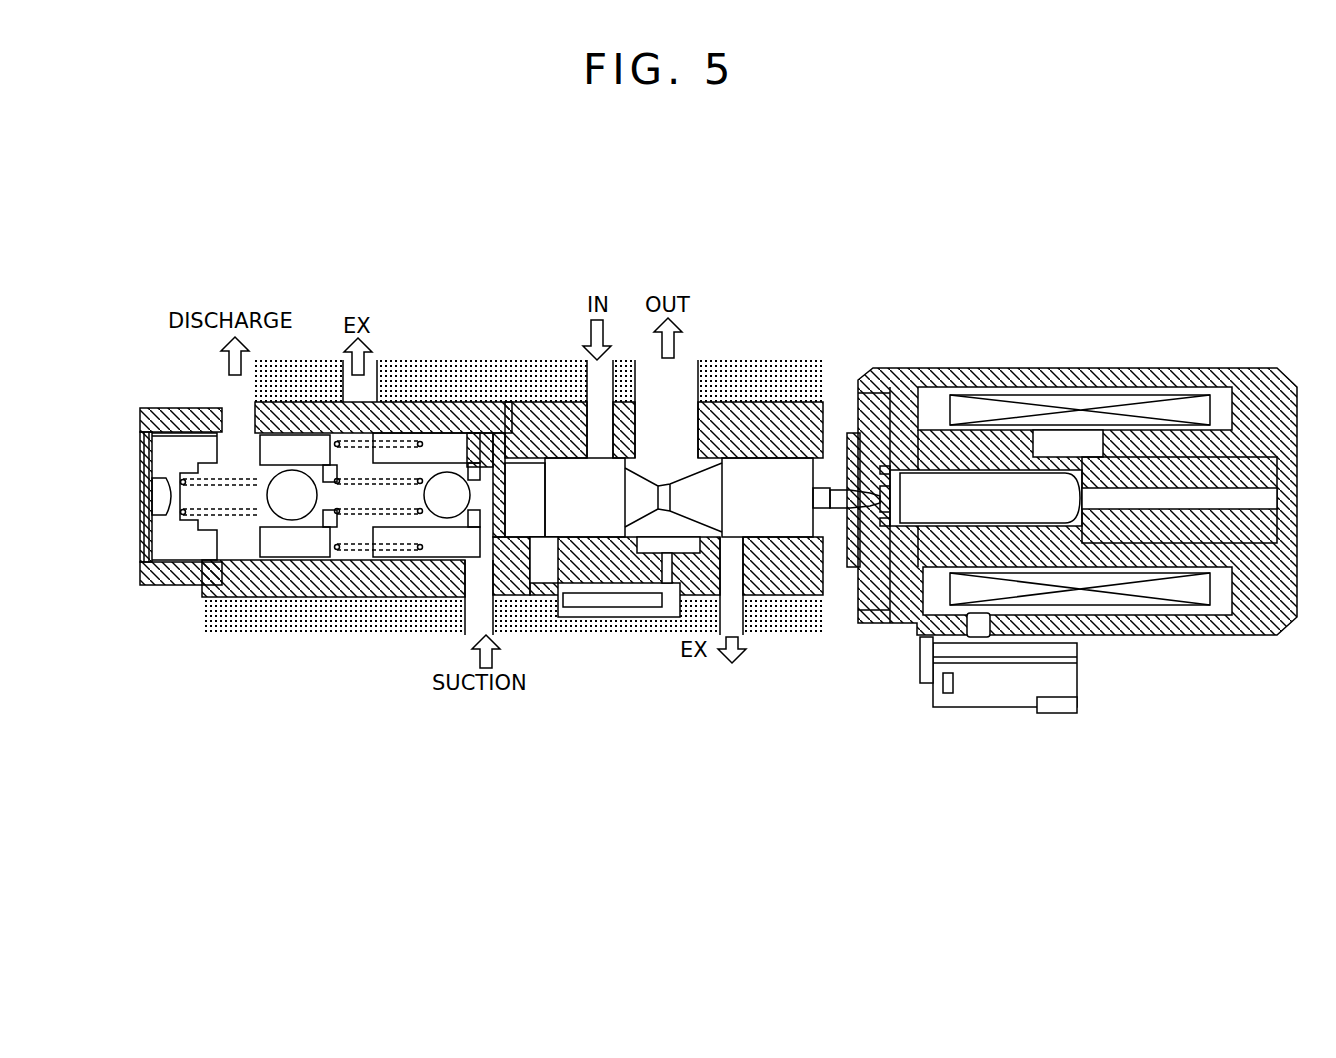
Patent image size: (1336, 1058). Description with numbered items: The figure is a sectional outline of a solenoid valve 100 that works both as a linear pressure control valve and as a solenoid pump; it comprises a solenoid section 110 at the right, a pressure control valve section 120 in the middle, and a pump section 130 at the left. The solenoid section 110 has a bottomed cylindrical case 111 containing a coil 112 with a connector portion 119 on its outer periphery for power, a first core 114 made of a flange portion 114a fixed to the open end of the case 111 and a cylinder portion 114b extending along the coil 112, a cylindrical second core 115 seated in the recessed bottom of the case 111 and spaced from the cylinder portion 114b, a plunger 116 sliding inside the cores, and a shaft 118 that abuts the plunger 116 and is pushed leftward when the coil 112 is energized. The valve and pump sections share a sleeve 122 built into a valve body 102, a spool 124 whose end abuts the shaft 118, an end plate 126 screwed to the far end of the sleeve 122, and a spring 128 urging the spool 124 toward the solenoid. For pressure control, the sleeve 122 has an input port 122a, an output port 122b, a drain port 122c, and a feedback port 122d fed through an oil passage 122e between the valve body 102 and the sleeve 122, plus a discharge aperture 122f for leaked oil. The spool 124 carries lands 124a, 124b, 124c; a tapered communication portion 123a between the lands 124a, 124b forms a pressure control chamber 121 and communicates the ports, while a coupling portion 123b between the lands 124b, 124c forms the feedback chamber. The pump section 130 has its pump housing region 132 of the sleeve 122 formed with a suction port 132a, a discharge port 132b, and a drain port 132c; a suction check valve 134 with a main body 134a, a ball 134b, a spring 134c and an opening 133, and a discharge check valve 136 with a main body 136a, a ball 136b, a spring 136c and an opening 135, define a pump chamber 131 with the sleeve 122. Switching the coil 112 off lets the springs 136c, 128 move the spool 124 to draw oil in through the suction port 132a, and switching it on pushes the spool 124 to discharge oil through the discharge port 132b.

The solenoid valve 100 is at (993, 194).
The valve body 102 is at (840, 580).
The solenoid section 110 is at (1290, 737).
The case 111 is at (1262, 395).
The coil 112 is at (1160, 410).
The first core 114 is at (998, 277).
The flange portion 114a is at (903, 455).
The cylinder portion 114b is at (960, 455).
The second core 115 is at (1213, 445).
The plunger 116 is at (1108, 450).
The shaft 118 is at (1035, 495).
The connector portion 119 is at (1017, 663).
The pressure control valve section 120 is at (848, 717).
The pressure control chamber 121 is at (684, 550).
The sleeve 122 is at (843, 440).
The input port 122a is at (597, 443).
The output port 122b is at (672, 443).
The drain port 122c is at (735, 564).
The feedback port 122d is at (545, 574).
The oil passage 122e is at (647, 618).
The discharge aperture 122f is at (848, 560).
The communication portion 123a is at (738, 478).
The coupling portion 123b is at (540, 457).
The spool 124 is at (603, 542).
The land 124a is at (800, 490).
The land 124b is at (568, 483).
The land 124c is at (512, 460).
The end plate 126 is at (157, 495).
The spring 128 is at (365, 550).
The pump section 130 is at (502, 715).
The pump chamber 131 is at (396, 507).
The valve housing 132 is at (326, 497).
The suction port 132a is at (483, 568).
The discharge port 132b is at (233, 418).
The drain port 132c is at (358, 396).
The opening 133 is at (522, 545).
The suction check valve 134 is at (437, 560).
The main body 134a is at (447, 495).
The ball 134b is at (458, 450).
The spring 134c is at (337, 540).
The opening 135 is at (329, 488).
The discharge check valve 136 is at (305, 432).
The main body 136a is at (297, 540).
The ball 136b is at (280, 508).
The spring 136c is at (205, 515).